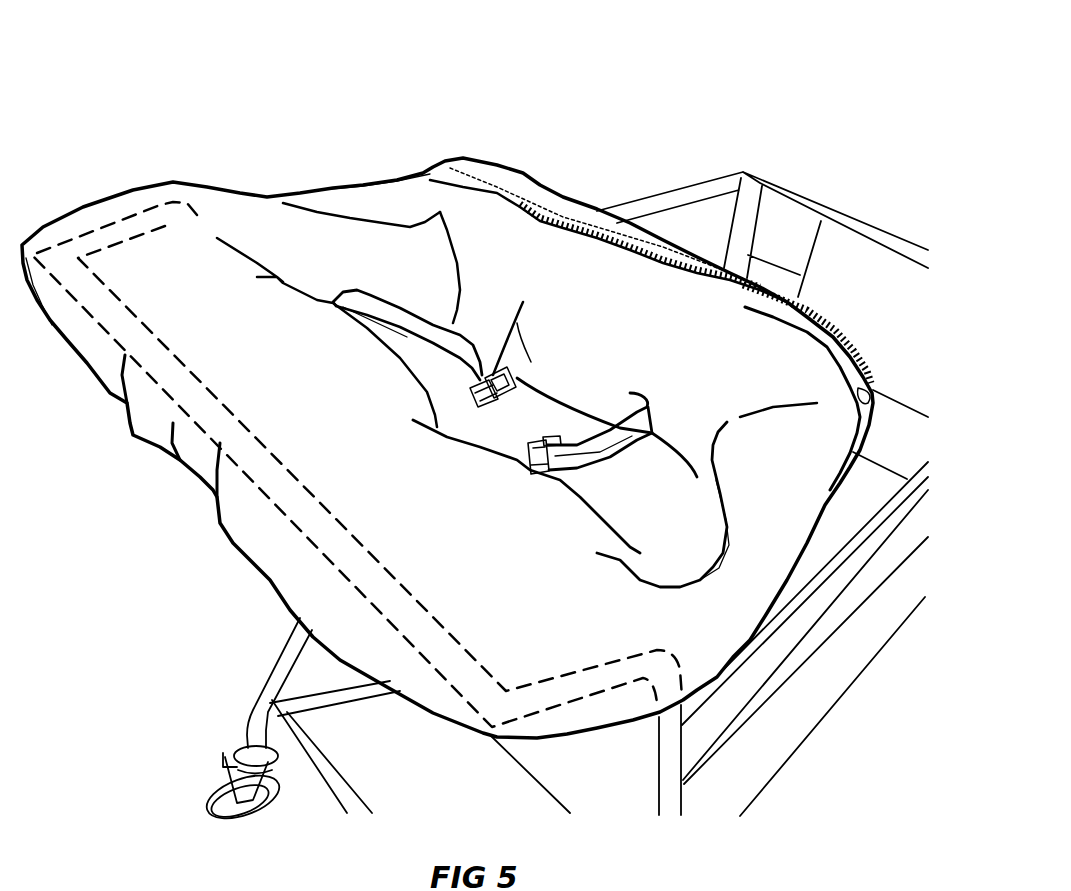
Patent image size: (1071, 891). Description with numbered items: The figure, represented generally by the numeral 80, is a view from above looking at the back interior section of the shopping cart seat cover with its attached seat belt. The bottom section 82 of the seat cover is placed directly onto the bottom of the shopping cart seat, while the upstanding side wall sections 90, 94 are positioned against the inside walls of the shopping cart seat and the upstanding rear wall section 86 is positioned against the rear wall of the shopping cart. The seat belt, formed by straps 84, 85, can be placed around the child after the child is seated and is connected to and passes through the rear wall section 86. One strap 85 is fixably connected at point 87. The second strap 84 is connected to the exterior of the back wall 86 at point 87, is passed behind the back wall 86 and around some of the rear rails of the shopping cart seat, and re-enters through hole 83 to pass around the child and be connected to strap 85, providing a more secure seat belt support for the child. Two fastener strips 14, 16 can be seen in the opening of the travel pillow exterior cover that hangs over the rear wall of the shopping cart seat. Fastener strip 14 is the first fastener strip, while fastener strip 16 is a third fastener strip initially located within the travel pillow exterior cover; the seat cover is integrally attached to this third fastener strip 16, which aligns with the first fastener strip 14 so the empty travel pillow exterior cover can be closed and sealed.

The fastener strip 14 is at (813, 305).
The fastener strip 16 is at (748, 305).
The shopping cart seat cover 80 is at (165, 118).
The bottom section 82 is at (441, 392).
The hole 83 is at (520, 330).
The second strap 84 is at (457, 357).
The strap 85 is at (607, 430).
The upstanding rear wall section 86 is at (740, 397).
The connection point 87 is at (645, 402).
The upstanding side wall section 90 is at (250, 227).
The upstanding side wall section 94 is at (705, 562).